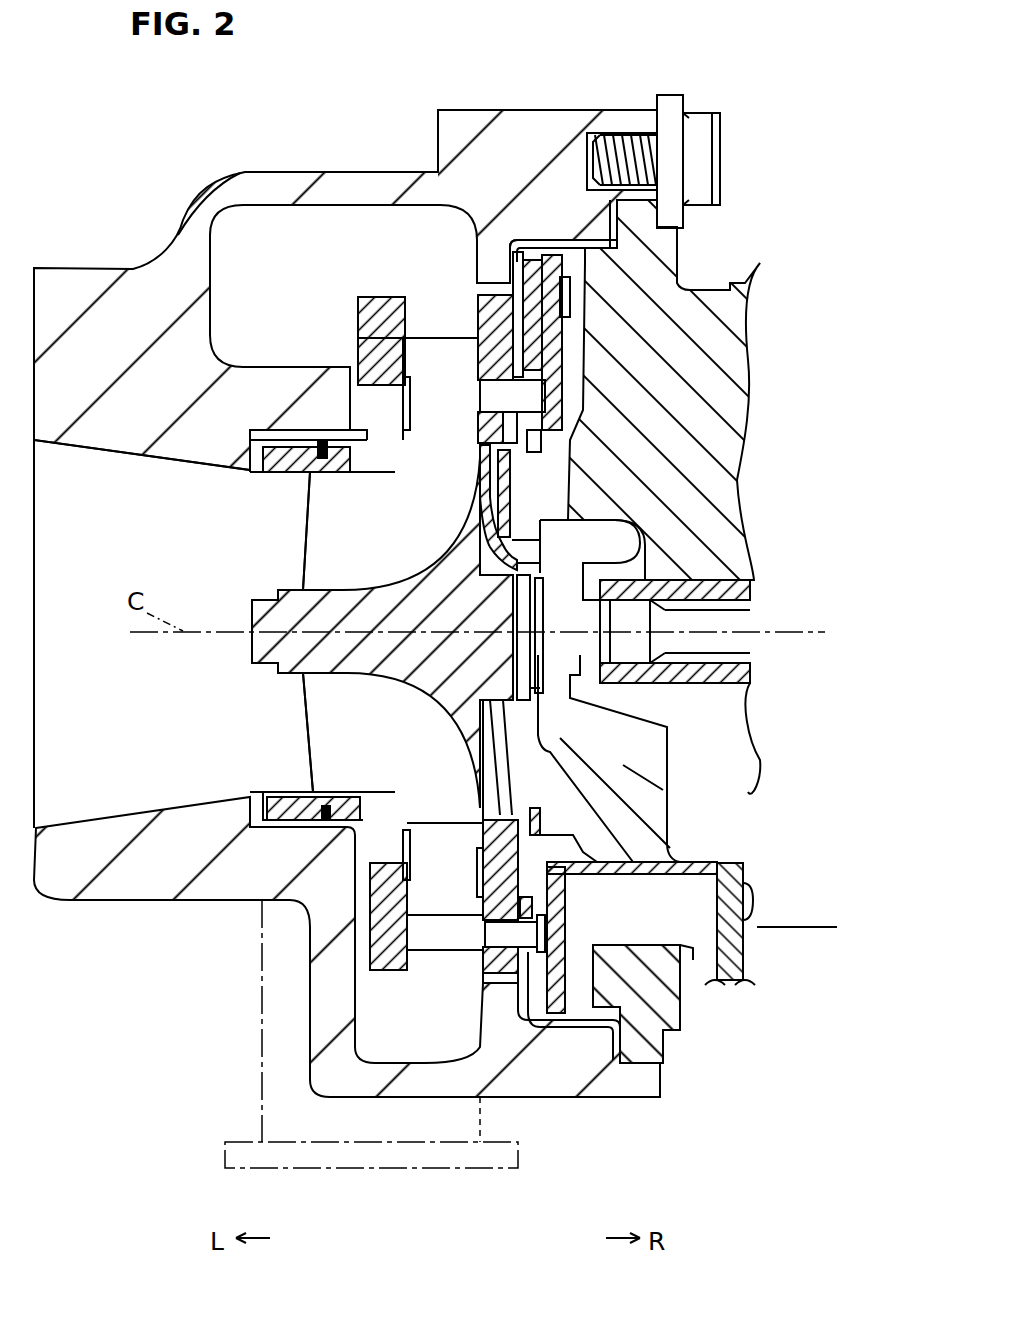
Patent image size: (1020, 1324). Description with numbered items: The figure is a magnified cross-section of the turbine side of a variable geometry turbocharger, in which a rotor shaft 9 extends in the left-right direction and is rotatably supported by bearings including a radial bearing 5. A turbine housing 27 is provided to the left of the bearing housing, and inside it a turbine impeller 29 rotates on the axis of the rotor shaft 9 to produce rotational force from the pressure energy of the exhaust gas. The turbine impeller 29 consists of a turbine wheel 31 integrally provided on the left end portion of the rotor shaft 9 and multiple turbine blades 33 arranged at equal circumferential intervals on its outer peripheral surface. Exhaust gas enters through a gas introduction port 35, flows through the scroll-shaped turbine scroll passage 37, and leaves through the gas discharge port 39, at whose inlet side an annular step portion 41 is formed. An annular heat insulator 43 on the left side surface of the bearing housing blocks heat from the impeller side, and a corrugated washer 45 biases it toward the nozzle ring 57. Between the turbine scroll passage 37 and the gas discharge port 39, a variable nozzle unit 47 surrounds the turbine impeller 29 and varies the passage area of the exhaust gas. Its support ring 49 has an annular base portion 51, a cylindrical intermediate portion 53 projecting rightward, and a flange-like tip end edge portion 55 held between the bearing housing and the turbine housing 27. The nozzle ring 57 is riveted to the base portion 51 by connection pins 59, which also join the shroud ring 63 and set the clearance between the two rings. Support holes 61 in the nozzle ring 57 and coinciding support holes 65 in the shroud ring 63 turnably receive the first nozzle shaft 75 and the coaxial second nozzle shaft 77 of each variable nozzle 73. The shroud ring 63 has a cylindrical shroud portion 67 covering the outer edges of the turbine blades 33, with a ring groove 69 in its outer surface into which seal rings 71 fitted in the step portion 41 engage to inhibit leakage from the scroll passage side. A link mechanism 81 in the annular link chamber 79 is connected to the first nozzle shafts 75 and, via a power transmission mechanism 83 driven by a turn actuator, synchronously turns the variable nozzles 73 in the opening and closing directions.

The radial bearing 5 is at (685, 680).
The rotor shaft 9 is at (713, 645).
The turbine housing 27 is at (354, 160).
The turbine impeller 29 is at (295, 555).
The turbine wheel 31 is at (343, 672).
The turbine blades 33 is at (310, 526).
The gas introduction port 35 is at (482, 1170).
The turbine scroll passage 37 is at (282, 222).
The gas discharge port 39 is at (97, 448).
The step portion 41 is at (285, 818).
The heat insulator 43 is at (503, 535).
The corrugated washer 45 is at (536, 440).
The variable nozzle unit 47 is at (308, 293).
The support ring 49 is at (560, 240).
The base portion 51 is at (490, 303).
The intermediate portion 53 is at (530, 260).
The tip end edge portion 55 is at (686, 214).
The nozzle ring 57 is at (513, 250).
The connection pins 59 is at (443, 953).
The support holes 61 is at (503, 447).
The shroud ring 63 is at (405, 297).
The support holes 65 is at (403, 433).
The shroud portion 67 is at (275, 448).
The ring groove 69 is at (330, 473).
The seal rings 71 is at (322, 438).
The variable nozzles 73 is at (462, 420).
The first nozzle shaft 75 is at (523, 397).
The second nozzle shaft 77 is at (383, 380).
The link chamber 79 is at (577, 355).
The link mechanism 81 is at (553, 342).
The power transmission mechanism 83 is at (743, 953).